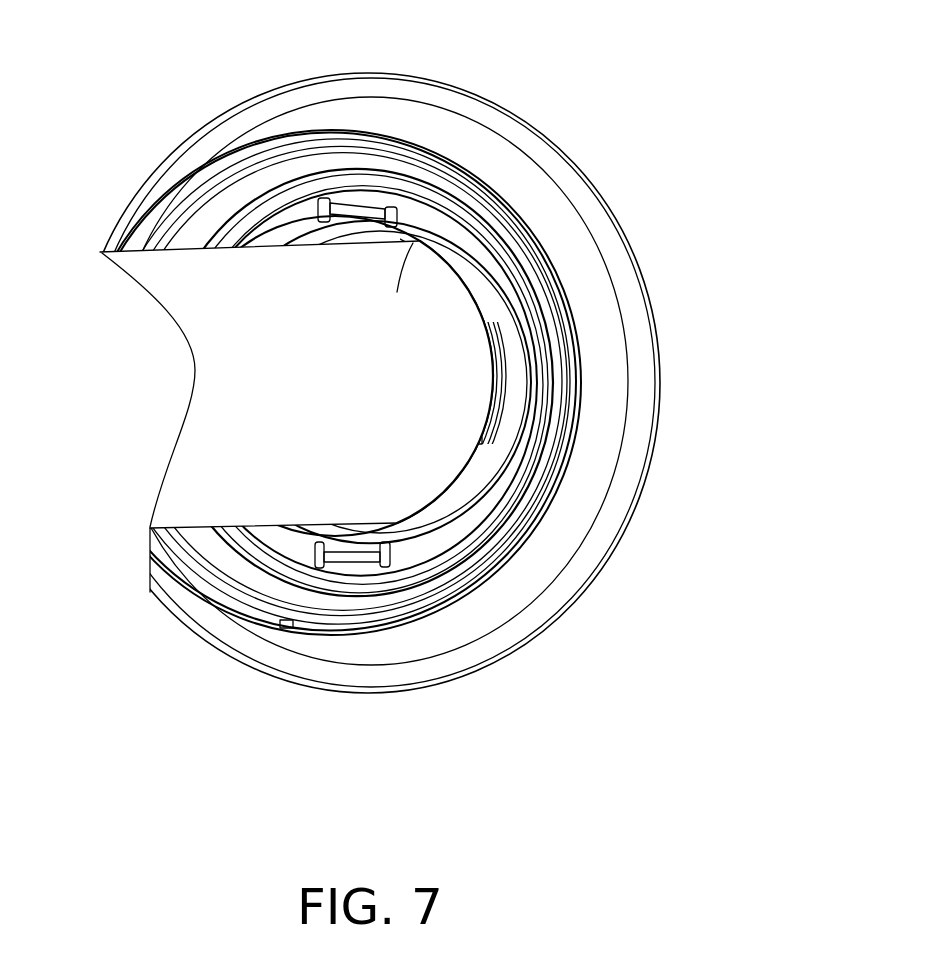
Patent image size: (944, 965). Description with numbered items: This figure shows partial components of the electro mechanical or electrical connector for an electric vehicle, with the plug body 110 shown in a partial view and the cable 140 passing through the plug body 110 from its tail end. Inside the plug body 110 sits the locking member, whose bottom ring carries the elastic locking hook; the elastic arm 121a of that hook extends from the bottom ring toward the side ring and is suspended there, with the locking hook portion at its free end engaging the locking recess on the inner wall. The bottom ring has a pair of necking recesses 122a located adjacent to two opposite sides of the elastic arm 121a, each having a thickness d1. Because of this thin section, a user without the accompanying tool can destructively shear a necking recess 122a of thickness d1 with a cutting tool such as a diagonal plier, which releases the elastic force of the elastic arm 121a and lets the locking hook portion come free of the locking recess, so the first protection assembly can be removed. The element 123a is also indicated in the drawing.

The plug body 110 is at (573, 243).
The elastic arm 121a is at (357, 207).
The necking recess 122a is at (325, 210).
The ring holder inner portion 123a is at (493, 370).
The cable 140 is at (213, 400).
The thickness d1 is at (447, 480).